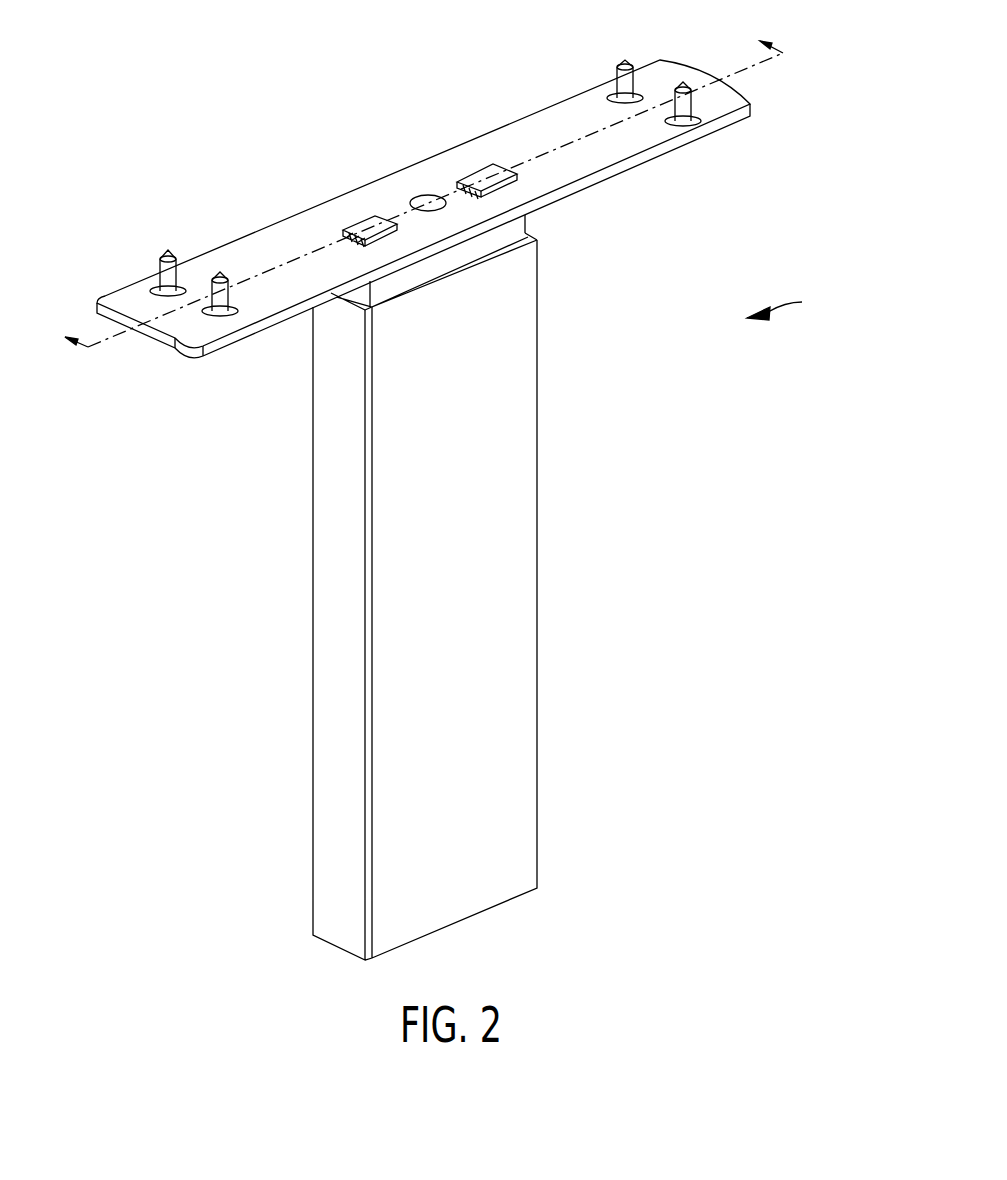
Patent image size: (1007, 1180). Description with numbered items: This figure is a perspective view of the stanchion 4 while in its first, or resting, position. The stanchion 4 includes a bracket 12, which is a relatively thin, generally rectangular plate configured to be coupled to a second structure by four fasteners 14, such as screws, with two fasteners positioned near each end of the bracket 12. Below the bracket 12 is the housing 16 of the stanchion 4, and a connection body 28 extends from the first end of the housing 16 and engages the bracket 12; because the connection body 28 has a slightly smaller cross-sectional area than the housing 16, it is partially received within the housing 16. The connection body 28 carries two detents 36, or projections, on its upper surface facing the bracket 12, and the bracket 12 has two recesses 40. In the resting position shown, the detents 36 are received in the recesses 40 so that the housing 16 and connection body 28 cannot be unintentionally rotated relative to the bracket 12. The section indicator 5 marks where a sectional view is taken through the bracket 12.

The stanchion 4 is at (780, 304).
The section line 5- 5 is at (415, 183).
The bracket 12 is at (270, 247).
The fasteners 14 is at (164, 269).
The housing 16 is at (316, 674).
The connection body 28 is at (498, 240).
The detents 36 is at (365, 218).
The recesses 40 is at (345, 231).